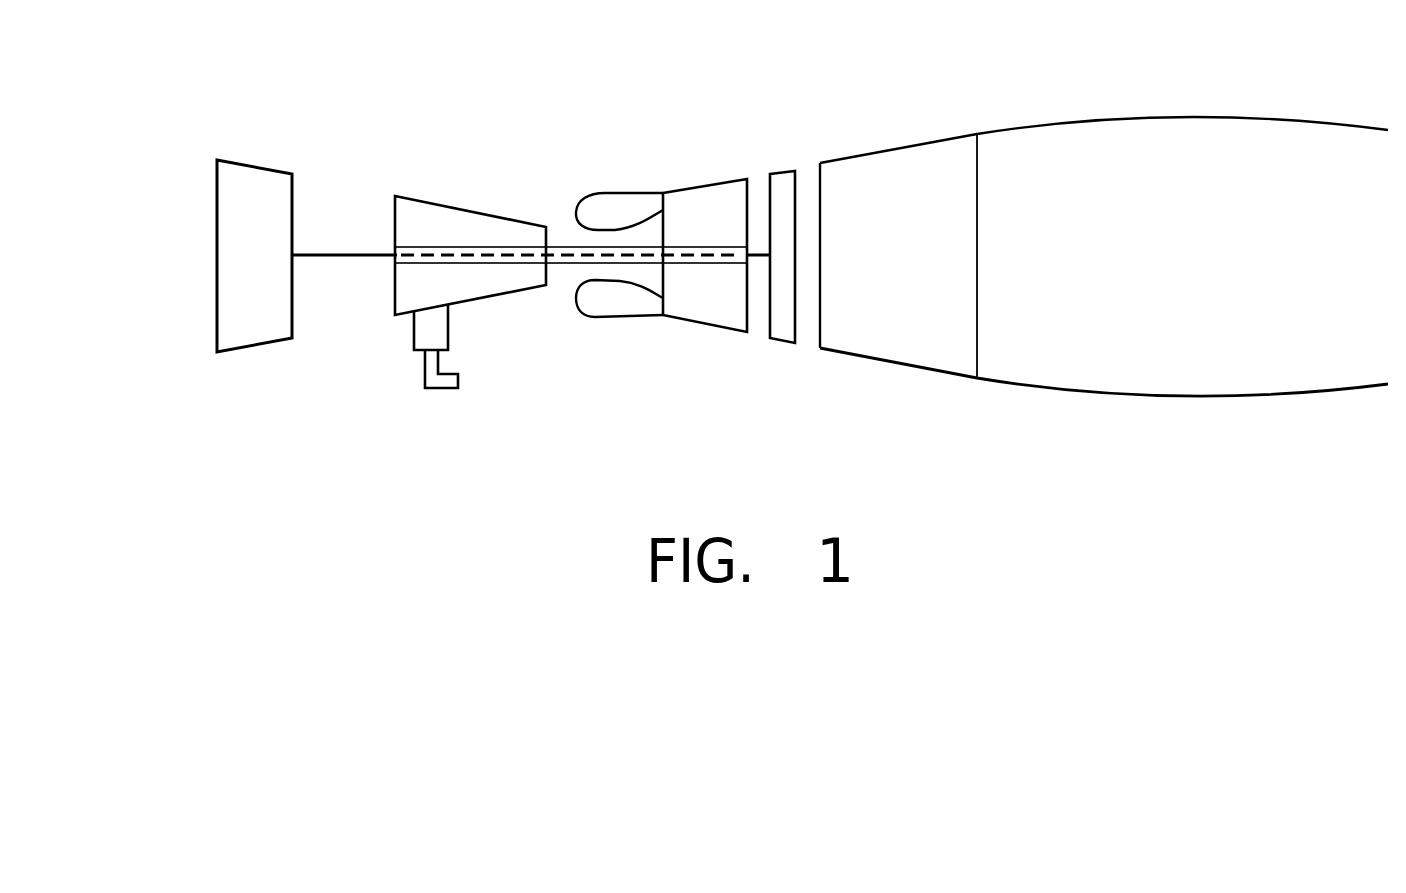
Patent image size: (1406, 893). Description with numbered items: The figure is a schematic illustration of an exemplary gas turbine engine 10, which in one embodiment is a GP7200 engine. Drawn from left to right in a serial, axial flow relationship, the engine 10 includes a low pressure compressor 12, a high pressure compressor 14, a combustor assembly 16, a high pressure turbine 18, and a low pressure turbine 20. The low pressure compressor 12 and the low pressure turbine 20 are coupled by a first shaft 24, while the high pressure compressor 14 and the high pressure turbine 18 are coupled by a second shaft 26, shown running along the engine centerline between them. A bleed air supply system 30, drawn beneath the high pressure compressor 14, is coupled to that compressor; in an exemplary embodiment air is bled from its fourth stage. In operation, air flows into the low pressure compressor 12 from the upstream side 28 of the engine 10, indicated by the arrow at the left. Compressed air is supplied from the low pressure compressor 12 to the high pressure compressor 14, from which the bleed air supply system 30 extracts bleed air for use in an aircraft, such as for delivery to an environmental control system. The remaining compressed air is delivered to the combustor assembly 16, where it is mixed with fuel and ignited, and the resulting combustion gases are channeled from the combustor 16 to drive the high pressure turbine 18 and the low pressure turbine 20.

The gas turbine engine 10 is at (990, 76).
The low pressure compressor 12 is at (278, 340).
The high pressure compressor 14 is at (447, 197).
The combustor assembly 16 is at (610, 319).
The high pressure turbine 18 is at (722, 332).
The low pressure turbine 20 is at (783, 343).
The first shaft 24 is at (315, 254).
The second shaft 26 is at (553, 246).
The upstream side 28 is at (178, 156).
The bleed air supply system 30 is at (400, 343).